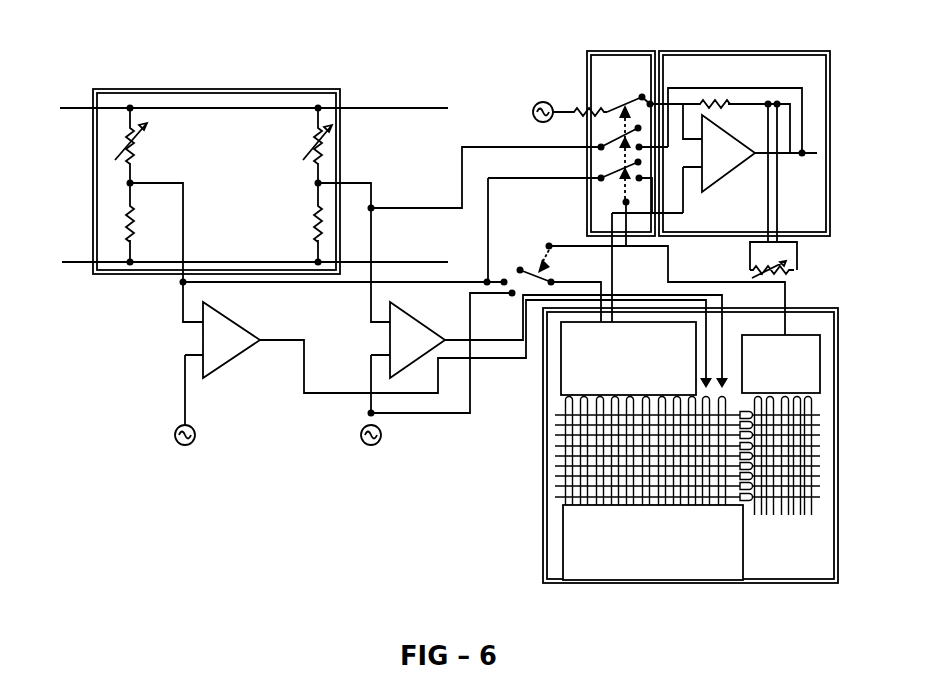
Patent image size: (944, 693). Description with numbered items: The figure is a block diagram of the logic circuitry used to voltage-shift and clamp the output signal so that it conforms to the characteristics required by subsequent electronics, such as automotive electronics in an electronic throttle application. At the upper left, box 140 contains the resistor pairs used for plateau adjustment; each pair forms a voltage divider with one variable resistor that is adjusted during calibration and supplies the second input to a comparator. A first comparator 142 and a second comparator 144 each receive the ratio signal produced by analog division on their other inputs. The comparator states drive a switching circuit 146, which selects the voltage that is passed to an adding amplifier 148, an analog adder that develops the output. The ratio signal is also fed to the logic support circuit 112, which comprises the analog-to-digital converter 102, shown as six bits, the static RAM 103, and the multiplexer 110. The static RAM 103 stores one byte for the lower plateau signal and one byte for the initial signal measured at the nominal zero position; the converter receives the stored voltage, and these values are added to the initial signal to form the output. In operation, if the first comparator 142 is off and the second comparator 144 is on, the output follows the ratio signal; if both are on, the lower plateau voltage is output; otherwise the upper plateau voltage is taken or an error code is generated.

The box of resistor pairs for plateau adjustment 140 is at (93, 183).
The first comparator 142 is at (222, 358).
The second comparator 144 is at (409, 331).
The switching circuit 146 is at (587, 80).
The adding amplifier 148 is at (805, 58).
The analog-to-digital converter 102 is at (573, 370).
The multiplexer 110 is at (810, 360).
The static RAM 103 is at (578, 570).
The logic support circuit 112 is at (748, 580).